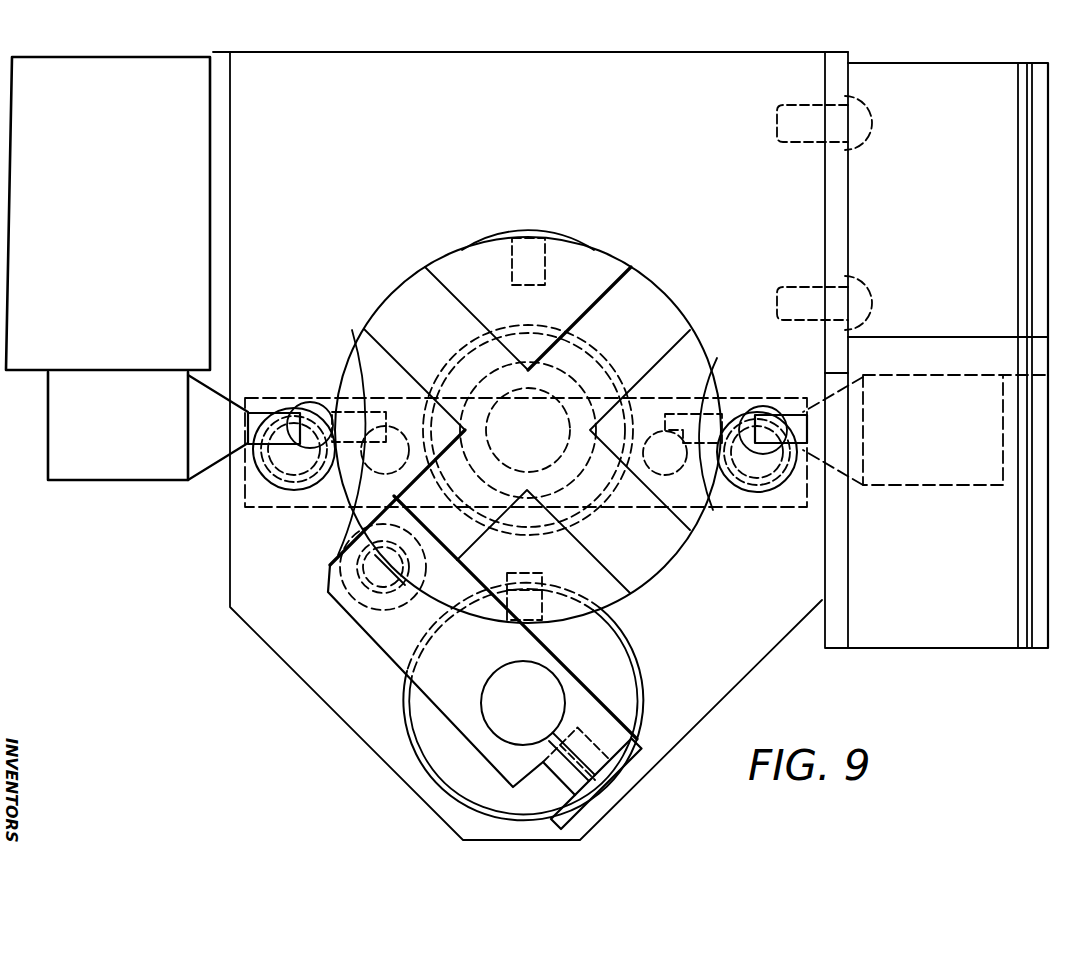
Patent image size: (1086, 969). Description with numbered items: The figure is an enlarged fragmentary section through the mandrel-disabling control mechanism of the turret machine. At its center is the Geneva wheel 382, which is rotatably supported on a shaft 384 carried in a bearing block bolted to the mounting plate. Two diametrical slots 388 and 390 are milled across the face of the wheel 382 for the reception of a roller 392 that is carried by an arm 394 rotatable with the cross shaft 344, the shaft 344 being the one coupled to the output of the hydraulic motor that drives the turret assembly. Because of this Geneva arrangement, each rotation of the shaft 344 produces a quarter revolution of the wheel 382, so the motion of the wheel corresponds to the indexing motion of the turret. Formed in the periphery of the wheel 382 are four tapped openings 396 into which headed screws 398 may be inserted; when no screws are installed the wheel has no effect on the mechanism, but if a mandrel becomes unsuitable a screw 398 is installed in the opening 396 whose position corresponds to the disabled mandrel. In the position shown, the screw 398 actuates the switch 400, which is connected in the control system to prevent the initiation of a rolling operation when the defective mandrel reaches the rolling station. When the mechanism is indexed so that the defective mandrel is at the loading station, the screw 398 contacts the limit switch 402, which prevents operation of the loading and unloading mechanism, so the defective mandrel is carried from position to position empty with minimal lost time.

The cross shaft 344 is at (550, 674).
The Geneva wheel 382 is at (488, 240).
The shaft 384 is at (580, 345).
The diametrical slot 388 is at (430, 282).
The diametrical slot 390 is at (670, 337).
The roller 392 is at (328, 584).
The arm 394 is at (380, 650).
The tapped opening 396 is at (540, 246).
The headed screw 398 is at (330, 405).
The switch 400 is at (213, 268).
The limit switch 402 is at (886, 73).